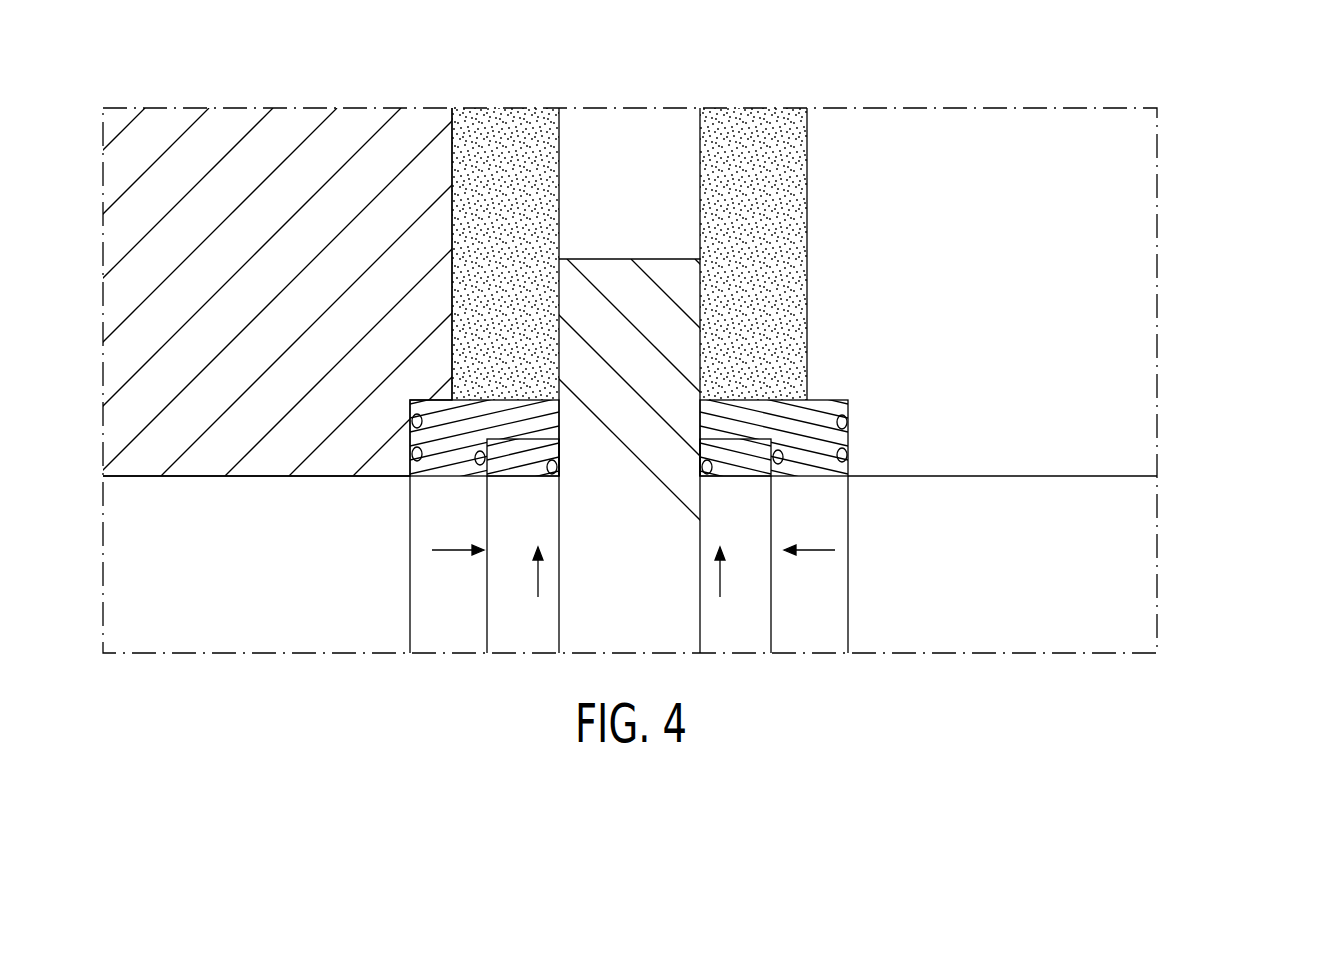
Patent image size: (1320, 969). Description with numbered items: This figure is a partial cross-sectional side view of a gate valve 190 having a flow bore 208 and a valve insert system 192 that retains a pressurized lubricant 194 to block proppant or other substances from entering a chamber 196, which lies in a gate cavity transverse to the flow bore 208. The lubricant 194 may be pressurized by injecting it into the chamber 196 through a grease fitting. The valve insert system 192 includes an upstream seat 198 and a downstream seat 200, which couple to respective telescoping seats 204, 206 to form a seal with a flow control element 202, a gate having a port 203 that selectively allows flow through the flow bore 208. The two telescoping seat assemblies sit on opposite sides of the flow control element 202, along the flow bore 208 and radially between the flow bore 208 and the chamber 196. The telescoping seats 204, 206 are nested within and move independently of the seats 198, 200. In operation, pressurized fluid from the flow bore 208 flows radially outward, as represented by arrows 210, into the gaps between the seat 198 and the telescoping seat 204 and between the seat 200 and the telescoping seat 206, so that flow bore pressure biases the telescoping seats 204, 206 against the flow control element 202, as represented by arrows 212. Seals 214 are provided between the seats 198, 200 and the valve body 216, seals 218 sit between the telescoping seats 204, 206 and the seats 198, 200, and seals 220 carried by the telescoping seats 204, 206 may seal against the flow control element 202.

The gate valve 190 is at (1204, 64).
The valve insert system 192 is at (314, 296).
The pressurized lubricant 194 is at (457, 158).
The chamber 196 is at (808, 252).
The upstream seat 198 is at (440, 470).
The downstream seat 200 is at (818, 470).
The flow control element 202 is at (623, 605).
The port 203 is at (607, 186).
The telescoping seat 204 is at (510, 460).
The telescoping seat 206 is at (748, 460).
The flow bore 208 is at (203, 572).
The arrows 210 is at (538, 578).
The arrows 212 is at (452, 551).
The seals 214 is at (412, 421).
The valve body 216 is at (209, 362).
The seals 218 is at (478, 466).
The seals 220 is at (562, 452).